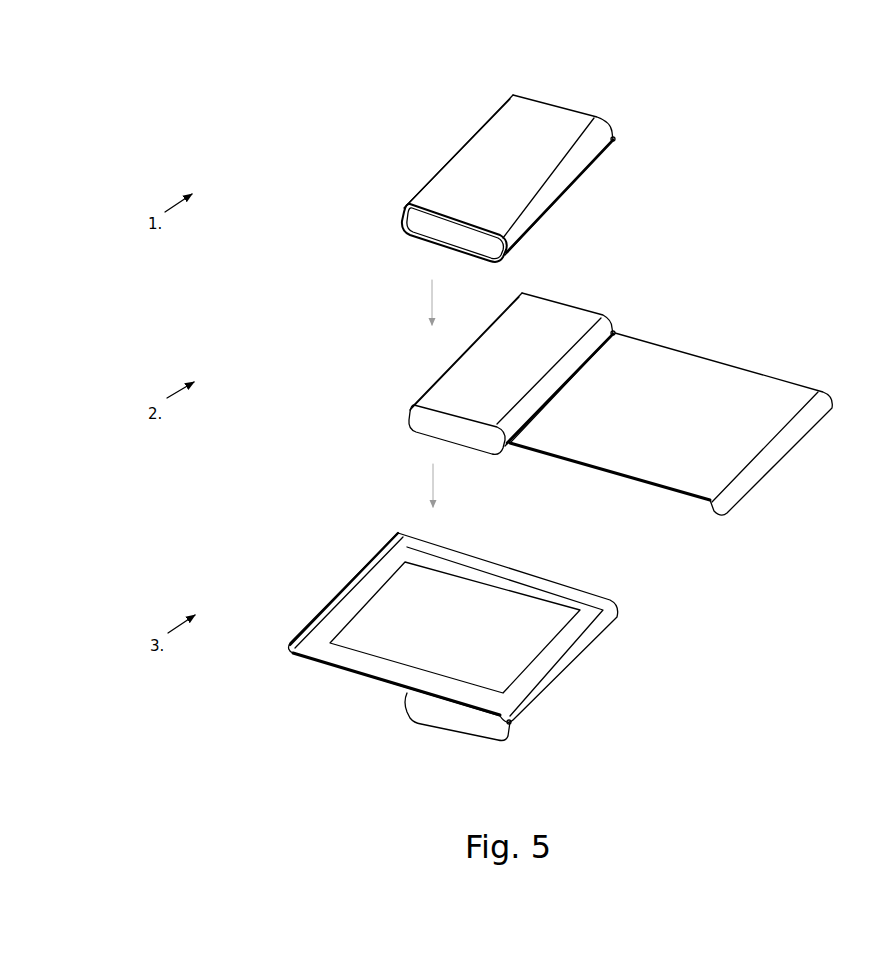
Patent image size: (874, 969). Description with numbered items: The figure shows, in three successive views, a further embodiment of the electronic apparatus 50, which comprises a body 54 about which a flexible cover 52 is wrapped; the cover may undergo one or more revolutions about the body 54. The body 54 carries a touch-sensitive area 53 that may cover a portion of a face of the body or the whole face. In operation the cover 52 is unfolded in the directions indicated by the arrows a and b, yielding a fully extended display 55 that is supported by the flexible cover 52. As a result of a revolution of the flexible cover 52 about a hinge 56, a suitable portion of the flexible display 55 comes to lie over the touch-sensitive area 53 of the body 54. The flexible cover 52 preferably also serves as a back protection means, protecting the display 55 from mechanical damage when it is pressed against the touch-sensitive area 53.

The electronic apparatus 50 is at (345, 70).
The flexible cover 52 is at (732, 502).
The touch-sensitive area 53 is at (547, 317).
The body 54 is at (430, 230).
The flexible display 55 is at (450, 603).
The hinge 56 is at (510, 728).
The arrow a is at (573, 150).
The arrow b is at (808, 373).